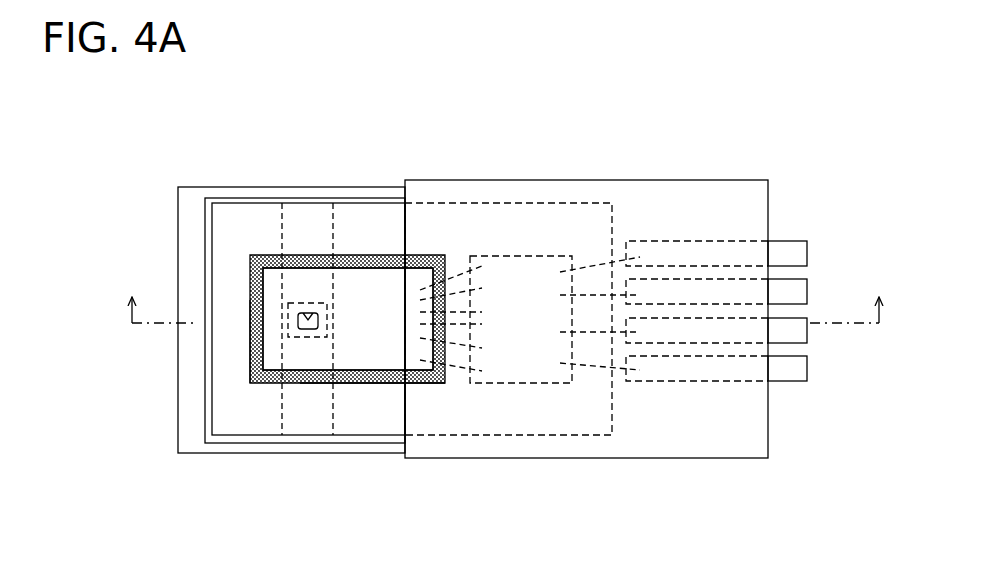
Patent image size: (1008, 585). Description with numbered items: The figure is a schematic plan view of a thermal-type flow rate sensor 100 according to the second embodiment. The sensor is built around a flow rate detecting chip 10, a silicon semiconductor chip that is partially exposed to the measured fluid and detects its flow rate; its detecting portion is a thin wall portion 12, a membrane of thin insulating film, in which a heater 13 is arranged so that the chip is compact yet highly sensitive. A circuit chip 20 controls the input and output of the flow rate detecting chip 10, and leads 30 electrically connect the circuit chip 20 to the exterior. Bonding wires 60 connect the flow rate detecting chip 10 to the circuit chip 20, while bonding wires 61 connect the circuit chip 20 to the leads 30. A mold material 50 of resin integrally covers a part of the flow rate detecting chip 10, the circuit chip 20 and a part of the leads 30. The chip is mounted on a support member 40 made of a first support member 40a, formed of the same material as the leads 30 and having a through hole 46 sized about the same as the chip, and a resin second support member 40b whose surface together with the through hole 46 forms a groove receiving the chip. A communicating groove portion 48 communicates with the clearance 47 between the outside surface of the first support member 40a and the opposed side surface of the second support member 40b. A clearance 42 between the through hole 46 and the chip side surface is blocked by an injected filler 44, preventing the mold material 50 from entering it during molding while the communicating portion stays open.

The thermal-type flow rate sensor 100 is at (785, 181).
The flow rate detecting chip 10 is at (273, 282).
The thin wall portion 12 is at (302, 302).
The heater 13 is at (306, 329).
The circuit chip 20 is at (515, 270).
The leads 30 is at (800, 252).
The support member 40 is at (113, 185).
The first support member 40a is at (237, 281).
The second support member 40b is at (195, 211).
The clearance 42 is at (378, 254).
The filler 44 is at (383, 384).
The through hole 46 is at (250, 360).
The clearance 47 is at (205, 343).
The communicating groove portion 48 is at (297, 417).
The mold material 50 is at (647, 198).
The bonding wires 60 is at (462, 362).
The bonding wires 61 is at (600, 365).